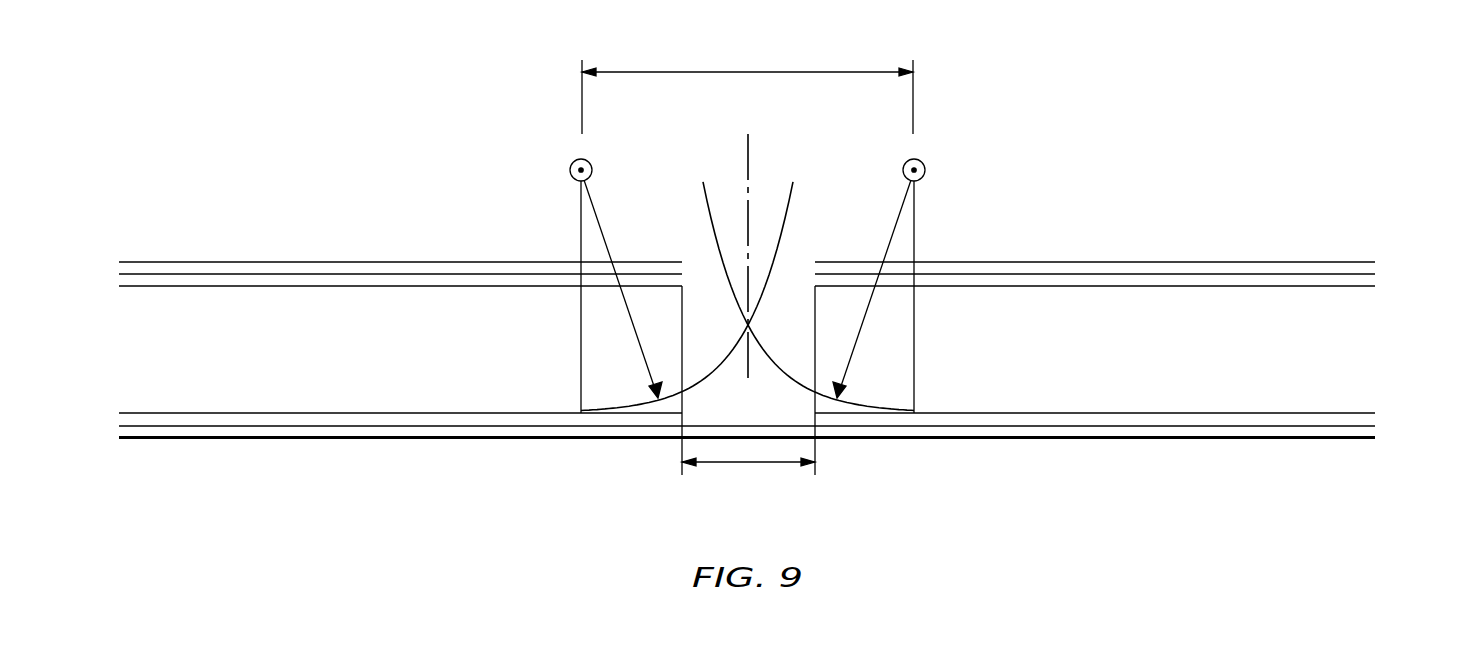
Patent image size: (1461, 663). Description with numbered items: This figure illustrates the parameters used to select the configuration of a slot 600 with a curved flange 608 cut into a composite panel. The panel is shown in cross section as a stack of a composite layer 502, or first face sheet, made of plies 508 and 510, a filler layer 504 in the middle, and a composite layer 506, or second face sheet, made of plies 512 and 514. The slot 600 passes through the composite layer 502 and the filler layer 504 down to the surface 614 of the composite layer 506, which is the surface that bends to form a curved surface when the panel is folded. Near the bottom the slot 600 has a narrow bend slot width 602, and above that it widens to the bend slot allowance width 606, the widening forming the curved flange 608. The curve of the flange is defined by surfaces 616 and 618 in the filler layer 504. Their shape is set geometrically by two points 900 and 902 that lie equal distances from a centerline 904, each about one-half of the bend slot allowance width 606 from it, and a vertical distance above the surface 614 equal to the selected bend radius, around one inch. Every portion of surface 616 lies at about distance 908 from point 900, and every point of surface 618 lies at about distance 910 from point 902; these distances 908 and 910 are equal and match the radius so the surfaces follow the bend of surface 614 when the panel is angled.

The composite layer 502 is at (779, 260).
The filler layer 504 is at (1196, 368).
The composite layer 506 is at (779, 446).
The ply 508 is at (1375, 265).
The ply 510 is at (1375, 286).
The ply 512 is at (1375, 415).
The ply 514 is at (1375, 438).
The slot 600 is at (747, 320).
The bend slot width 602 is at (748, 464).
The bend slot allowance width 606 is at (748, 70).
The curved flange 608 is at (780, 375).
The surface 614 is at (1178, 440).
The surface 616 is at (647, 407).
The surface 618 is at (838, 407).
The point 900 is at (569, 172).
The point 902 is at (925, 172).
The centerline 904 is at (747, 147).
The distance 908 is at (604, 228).
The distance 910 is at (893, 229).